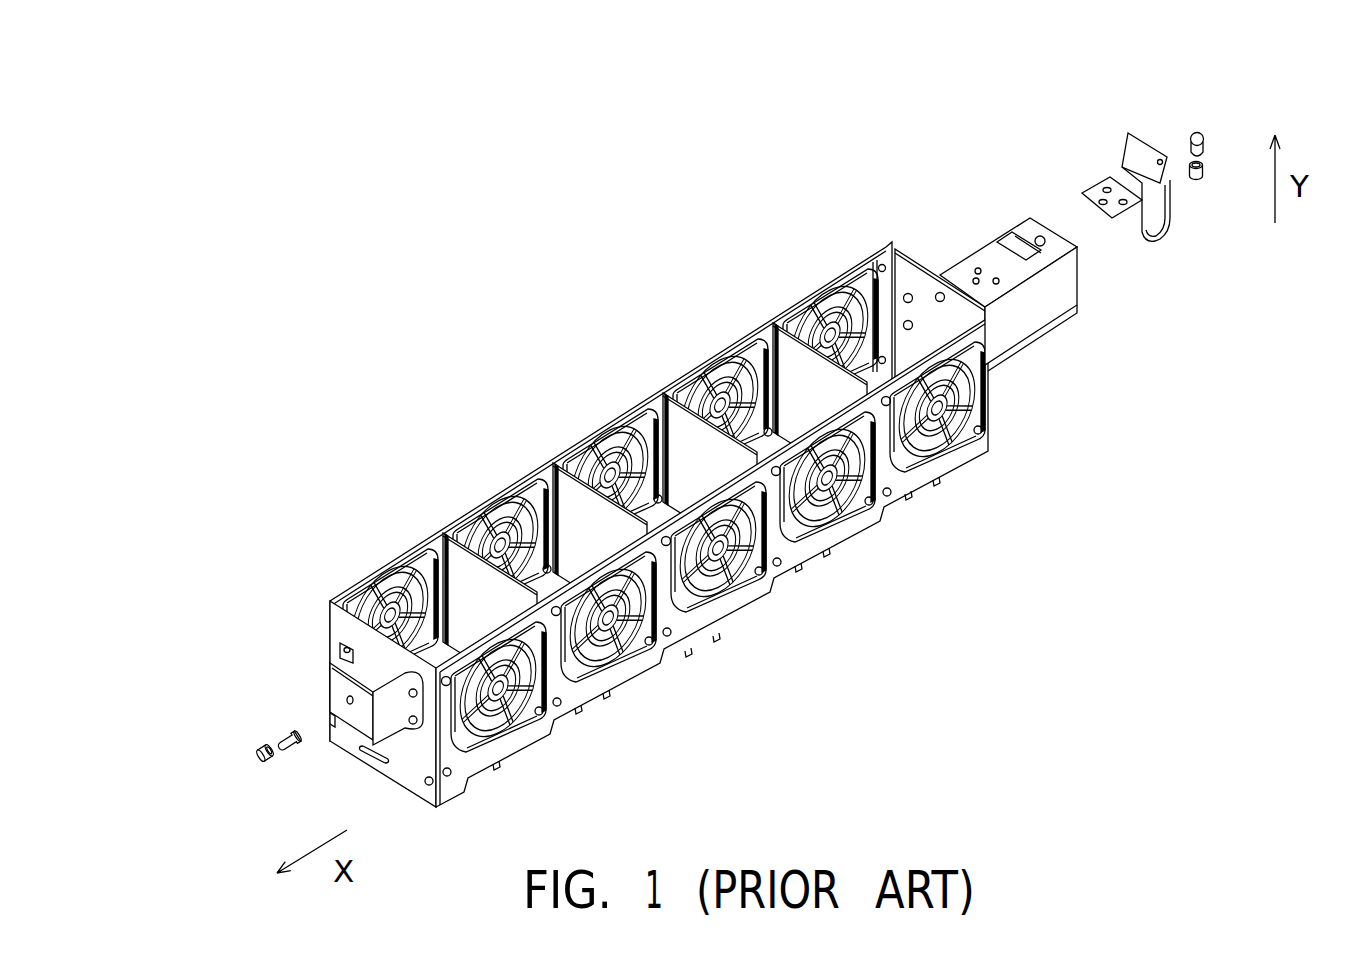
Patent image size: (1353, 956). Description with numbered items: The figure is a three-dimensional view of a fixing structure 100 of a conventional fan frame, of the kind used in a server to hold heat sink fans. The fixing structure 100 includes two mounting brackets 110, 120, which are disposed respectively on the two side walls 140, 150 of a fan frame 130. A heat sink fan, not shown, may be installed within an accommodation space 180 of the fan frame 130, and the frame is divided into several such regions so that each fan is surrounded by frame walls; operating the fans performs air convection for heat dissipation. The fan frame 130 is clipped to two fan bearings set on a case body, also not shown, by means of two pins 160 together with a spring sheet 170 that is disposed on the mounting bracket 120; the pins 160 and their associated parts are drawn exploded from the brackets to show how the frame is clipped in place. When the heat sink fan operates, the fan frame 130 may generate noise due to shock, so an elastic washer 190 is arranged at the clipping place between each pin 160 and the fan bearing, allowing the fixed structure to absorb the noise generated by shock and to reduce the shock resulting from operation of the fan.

The fixing structure 100 is at (1268, 69).
The mounting bracket 110 is at (333, 680).
The mounting bracket 120 is at (988, 262).
The fan frame 130 is at (588, 434).
The side wall 140 is at (332, 625).
The side wall 150 is at (912, 277).
The pin 160 is at (1203, 131).
The spring sheet 170 is at (1142, 153).
The accommodation space 180 is at (786, 369).
The elastic washer 190 is at (1205, 170).